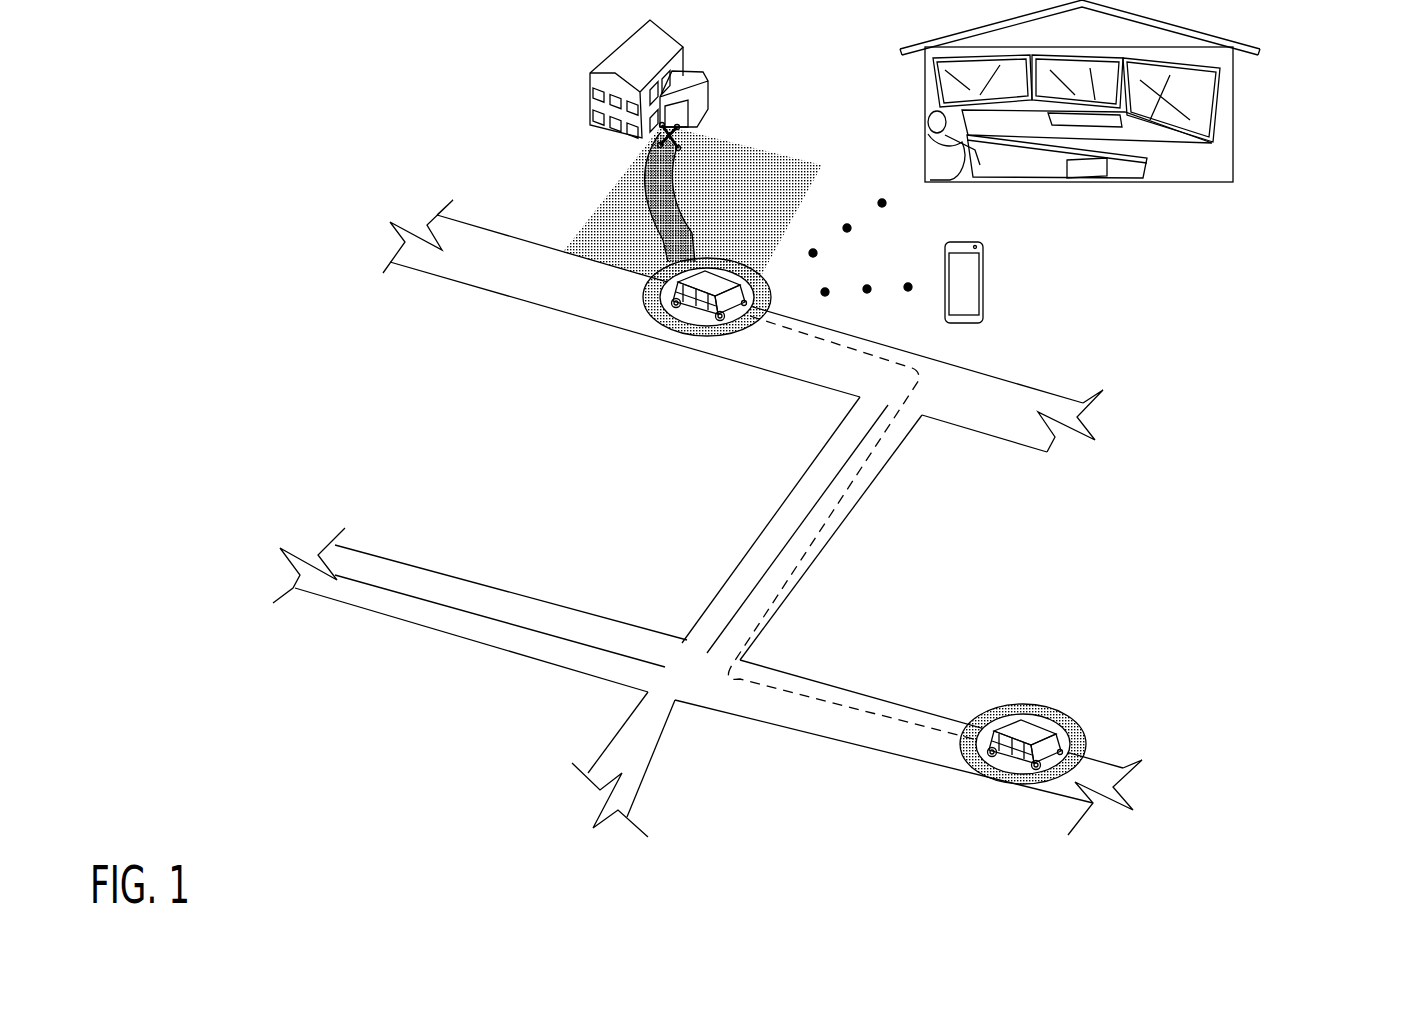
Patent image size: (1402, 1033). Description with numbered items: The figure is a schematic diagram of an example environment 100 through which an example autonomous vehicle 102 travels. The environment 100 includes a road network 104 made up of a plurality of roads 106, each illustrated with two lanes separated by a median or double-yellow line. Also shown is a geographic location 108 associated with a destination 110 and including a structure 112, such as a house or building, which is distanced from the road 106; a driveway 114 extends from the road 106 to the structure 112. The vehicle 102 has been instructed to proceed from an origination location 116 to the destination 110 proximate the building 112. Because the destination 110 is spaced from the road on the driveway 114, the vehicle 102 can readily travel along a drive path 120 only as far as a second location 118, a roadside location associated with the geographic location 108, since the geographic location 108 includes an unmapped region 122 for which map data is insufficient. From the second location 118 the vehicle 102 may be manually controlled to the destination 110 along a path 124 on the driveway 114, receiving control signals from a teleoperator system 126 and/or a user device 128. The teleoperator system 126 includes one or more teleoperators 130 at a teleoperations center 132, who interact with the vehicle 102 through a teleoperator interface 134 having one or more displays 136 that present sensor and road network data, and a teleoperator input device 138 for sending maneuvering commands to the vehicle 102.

The environment 100 is at (275, 118).
The vehicle 102 is at (667, 312).
The road network 104 is at (1062, 363).
The roads 106 is at (982, 432).
The geographic location 108 is at (511, 80).
The destination 110 is at (672, 132).
The structure 112 is at (613, 60).
The driveway 114 is at (677, 192).
The origination location 116 is at (1070, 750).
The second location 118 is at (710, 335).
The drive path 120 is at (790, 567).
The unmapped region 122 is at (608, 213).
The path 124 is at (673, 218).
The teleoperator system 126 is at (1233, 137).
The user device 128 is at (983, 292).
The teleoperator 130 is at (935, 137).
The teleoperations center 132 is at (1147, 145).
The teleoperator interface 134 is at (1246, 81).
The displays 136 is at (1197, 103).
The teleoperator input device 138 is at (1105, 173).